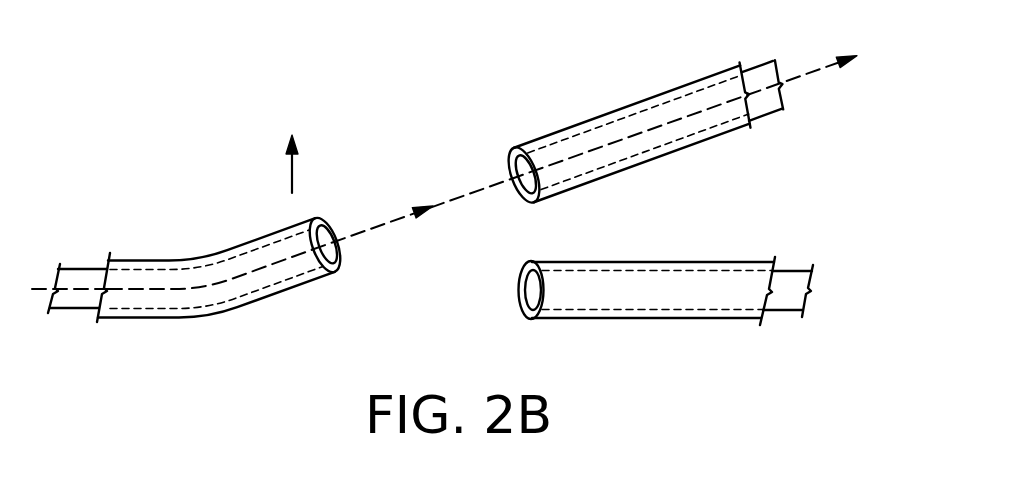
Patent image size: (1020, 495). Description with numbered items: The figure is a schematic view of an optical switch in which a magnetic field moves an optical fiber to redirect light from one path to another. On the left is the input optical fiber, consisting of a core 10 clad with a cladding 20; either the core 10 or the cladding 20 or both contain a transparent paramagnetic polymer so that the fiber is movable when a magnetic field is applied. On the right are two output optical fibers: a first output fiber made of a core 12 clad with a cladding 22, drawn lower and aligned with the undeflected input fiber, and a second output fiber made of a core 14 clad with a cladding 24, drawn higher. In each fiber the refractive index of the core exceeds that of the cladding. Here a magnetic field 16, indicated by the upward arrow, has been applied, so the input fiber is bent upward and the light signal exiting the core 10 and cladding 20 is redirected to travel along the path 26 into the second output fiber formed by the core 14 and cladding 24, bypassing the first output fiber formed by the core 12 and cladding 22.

The core 10 is at (88, 268).
The cladding 20 is at (229, 249).
The magnetic field 16 is at (289, 165).
The path 26 is at (459, 197).
The cladding 24 is at (665, 92).
The core 14 is at (752, 68).
The cladding 22 is at (689, 261).
The core 12 is at (788, 269).